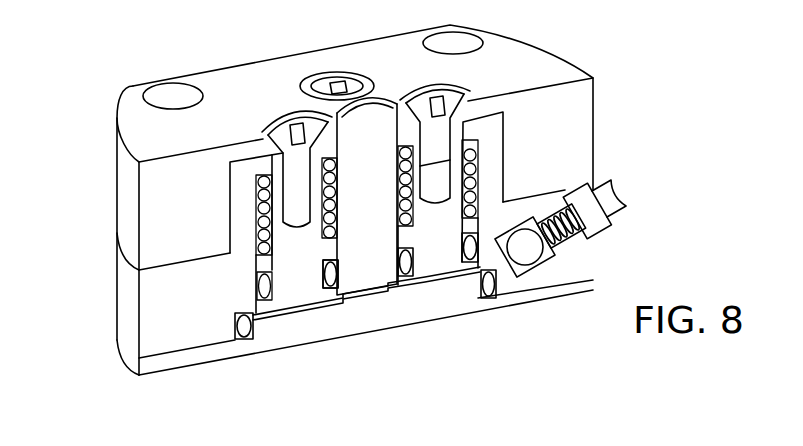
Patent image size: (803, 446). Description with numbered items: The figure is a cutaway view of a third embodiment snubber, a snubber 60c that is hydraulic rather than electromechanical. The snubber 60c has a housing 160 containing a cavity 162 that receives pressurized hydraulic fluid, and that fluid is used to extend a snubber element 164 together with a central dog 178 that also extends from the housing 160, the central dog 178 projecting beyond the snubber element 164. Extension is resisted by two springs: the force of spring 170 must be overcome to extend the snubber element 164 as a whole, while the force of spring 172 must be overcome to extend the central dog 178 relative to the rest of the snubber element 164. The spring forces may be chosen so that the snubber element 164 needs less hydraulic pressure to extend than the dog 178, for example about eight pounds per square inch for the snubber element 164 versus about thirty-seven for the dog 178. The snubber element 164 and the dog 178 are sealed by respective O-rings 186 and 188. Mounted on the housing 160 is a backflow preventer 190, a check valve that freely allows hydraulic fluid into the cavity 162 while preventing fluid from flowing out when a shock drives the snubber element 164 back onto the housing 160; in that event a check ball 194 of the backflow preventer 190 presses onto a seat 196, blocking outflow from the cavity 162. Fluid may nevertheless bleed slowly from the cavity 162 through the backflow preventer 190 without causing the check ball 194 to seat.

The snubber 60c is at (98, 97).
The housing 160 is at (170, 305).
The cavity 162 is at (367, 313).
The snubber element 164 is at (578, 128).
The spring 170 is at (260, 197).
The spring 172 is at (327, 179).
The central dog 178 is at (367, 137).
The O-ring 186 is at (257, 290).
The O-ring 188 is at (322, 277).
The backflow preventer 190 is at (598, 254).
The check ball 194 is at (522, 252).
The seat 196 is at (540, 250).